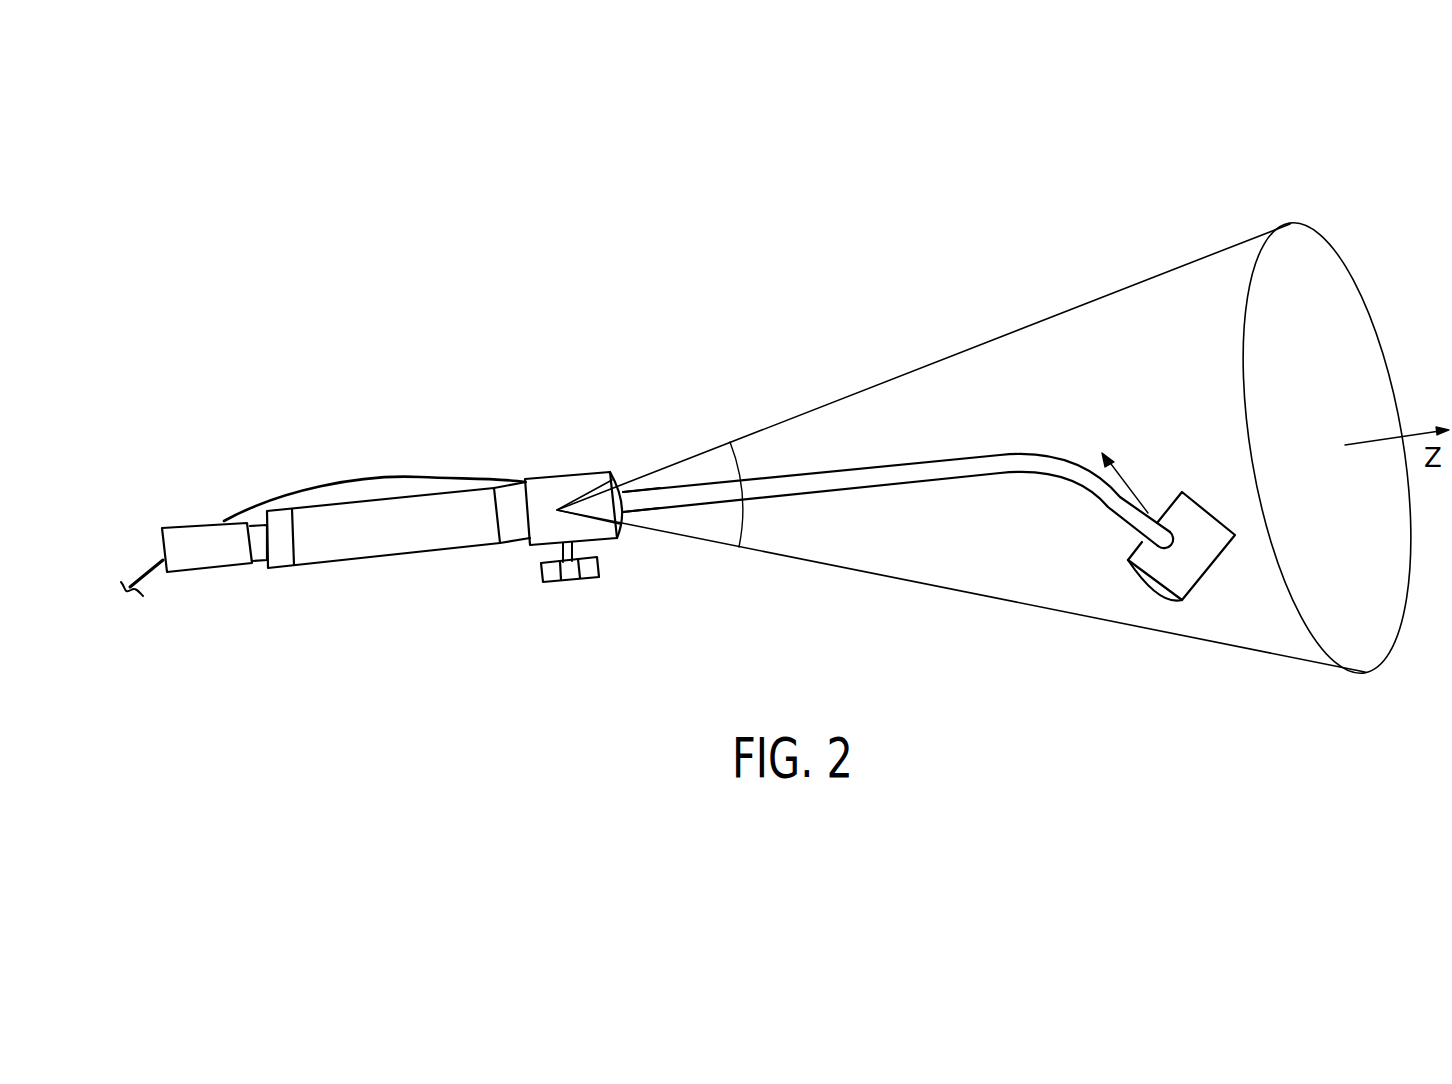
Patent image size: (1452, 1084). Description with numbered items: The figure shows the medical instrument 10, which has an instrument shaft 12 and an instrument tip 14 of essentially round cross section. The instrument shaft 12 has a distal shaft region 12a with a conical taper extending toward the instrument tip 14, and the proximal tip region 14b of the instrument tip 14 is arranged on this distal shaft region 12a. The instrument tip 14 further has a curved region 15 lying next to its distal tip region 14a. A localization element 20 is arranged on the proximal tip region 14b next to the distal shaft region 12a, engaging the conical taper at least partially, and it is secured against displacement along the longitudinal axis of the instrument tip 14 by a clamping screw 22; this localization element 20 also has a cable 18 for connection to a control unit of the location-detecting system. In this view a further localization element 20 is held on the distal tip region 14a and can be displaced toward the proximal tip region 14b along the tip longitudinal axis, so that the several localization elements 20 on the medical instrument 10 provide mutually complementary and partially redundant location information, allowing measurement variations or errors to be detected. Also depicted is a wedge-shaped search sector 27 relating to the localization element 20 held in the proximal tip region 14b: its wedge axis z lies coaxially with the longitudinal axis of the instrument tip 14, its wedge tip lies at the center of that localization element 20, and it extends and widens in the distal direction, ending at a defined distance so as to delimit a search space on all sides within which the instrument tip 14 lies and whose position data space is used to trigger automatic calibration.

The medical instrument 10 is at (586, 341).
The instrument shaft 12 is at (413, 545).
The distal shaft region 12a is at (508, 496).
The instrument tip 14 is at (1070, 462).
The distal tip region 14a is at (1135, 471).
The proximal tip region 14b is at (640, 458).
The curved region 15 is at (1037, 433).
The cable 18 is at (392, 477).
The localization element 20 is at (562, 480).
The clamping screw 22 is at (573, 573).
The search sector 27 is at (1303, 648).